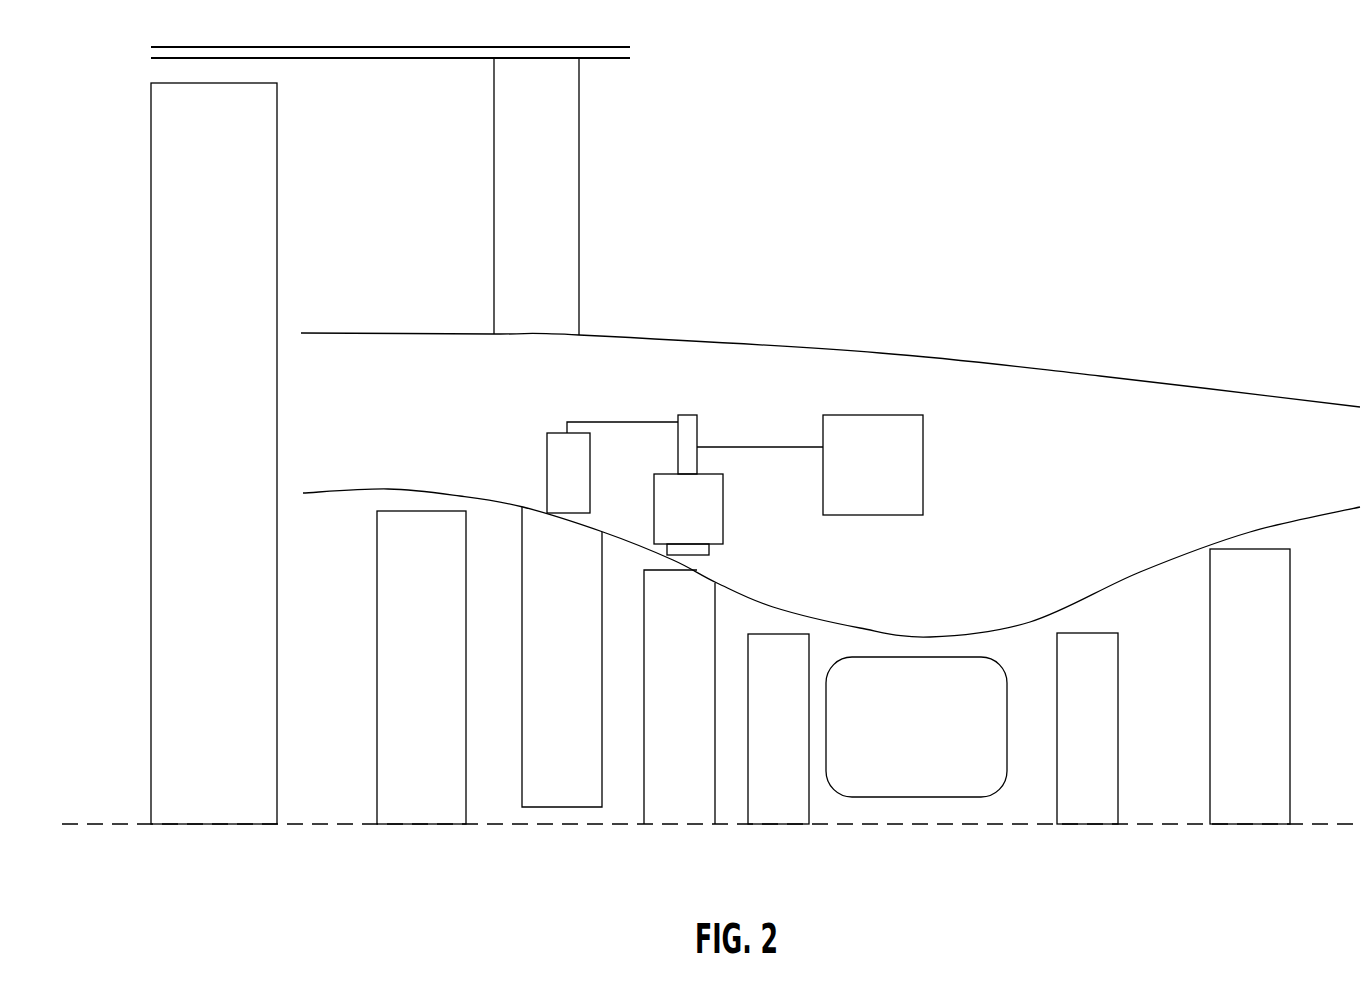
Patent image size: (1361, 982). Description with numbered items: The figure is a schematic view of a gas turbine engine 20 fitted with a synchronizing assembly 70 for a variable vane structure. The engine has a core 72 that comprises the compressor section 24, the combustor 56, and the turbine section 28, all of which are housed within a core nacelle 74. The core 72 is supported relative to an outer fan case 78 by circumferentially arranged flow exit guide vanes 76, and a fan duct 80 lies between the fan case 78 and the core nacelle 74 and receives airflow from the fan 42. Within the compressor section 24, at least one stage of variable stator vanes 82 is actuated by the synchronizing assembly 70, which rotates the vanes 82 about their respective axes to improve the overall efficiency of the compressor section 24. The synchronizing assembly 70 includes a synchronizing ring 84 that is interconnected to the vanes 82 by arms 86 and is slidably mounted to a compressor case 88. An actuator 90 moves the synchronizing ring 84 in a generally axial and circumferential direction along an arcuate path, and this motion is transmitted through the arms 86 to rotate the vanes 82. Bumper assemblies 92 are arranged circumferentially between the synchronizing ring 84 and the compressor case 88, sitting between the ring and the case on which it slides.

The gas turbine engine 20 is at (770, 218).
The compressor section 24 is at (583, 686).
The turbine section 28 is at (1327, 846).
The fan 42 is at (150, 318).
The combustor 56 is at (1012, 846).
The synchronizing assembly 70 is at (685, 475).
The core 72 is at (1070, 373).
The core nacelle 74 is at (880, 352).
The flow exit guide vanes 76 is at (552, 207).
The fan case 78 is at (400, 50).
The fan duct 80 is at (396, 279).
The variable stator vanes 82 is at (533, 537).
The synchronizing ring 84 is at (710, 507).
The arms 86 is at (610, 418).
The compressor case 88 is at (780, 609).
The actuator 90 is at (910, 462).
The bumper assemblies 92 is at (700, 549).